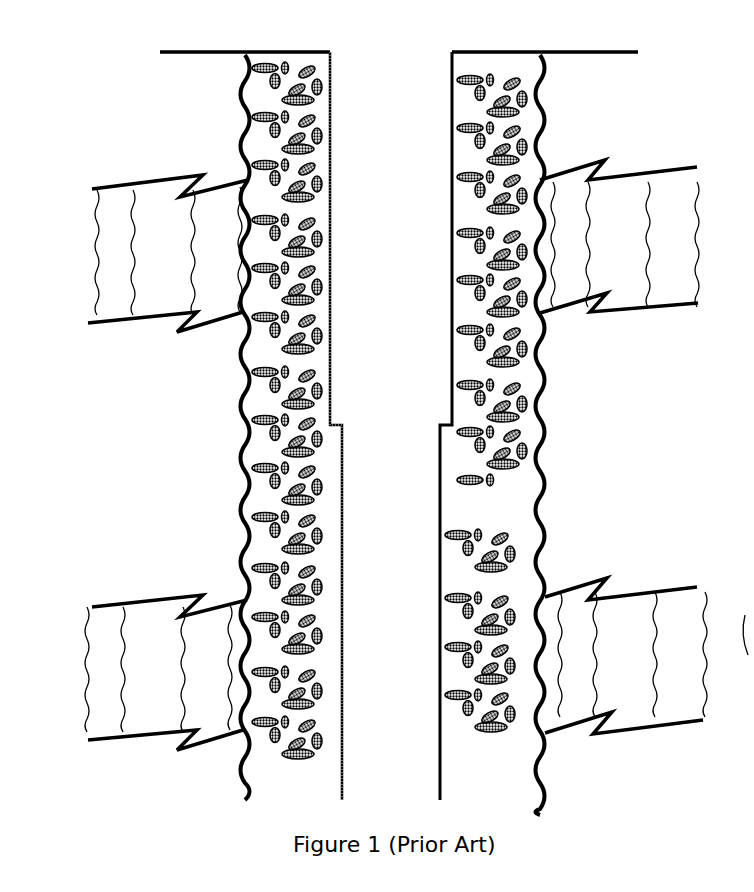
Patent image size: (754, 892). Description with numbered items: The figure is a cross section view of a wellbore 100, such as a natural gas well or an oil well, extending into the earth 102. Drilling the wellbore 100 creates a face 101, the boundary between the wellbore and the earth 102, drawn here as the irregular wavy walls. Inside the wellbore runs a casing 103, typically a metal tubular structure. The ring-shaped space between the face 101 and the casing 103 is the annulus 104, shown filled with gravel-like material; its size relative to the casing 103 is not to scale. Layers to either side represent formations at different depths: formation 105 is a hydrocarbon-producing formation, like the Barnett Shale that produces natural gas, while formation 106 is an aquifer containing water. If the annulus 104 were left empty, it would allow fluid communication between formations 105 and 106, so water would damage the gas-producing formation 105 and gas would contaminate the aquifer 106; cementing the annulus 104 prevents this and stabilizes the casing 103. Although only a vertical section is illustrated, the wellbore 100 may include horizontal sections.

The wellbore 100 is at (416, 410).
The face 101 is at (540, 437).
The earth 102 is at (619, 200).
The casing 103 is at (332, 216).
The annulus 104 is at (480, 610).
The formation 105 is at (153, 618).
The formation 106 is at (158, 257).